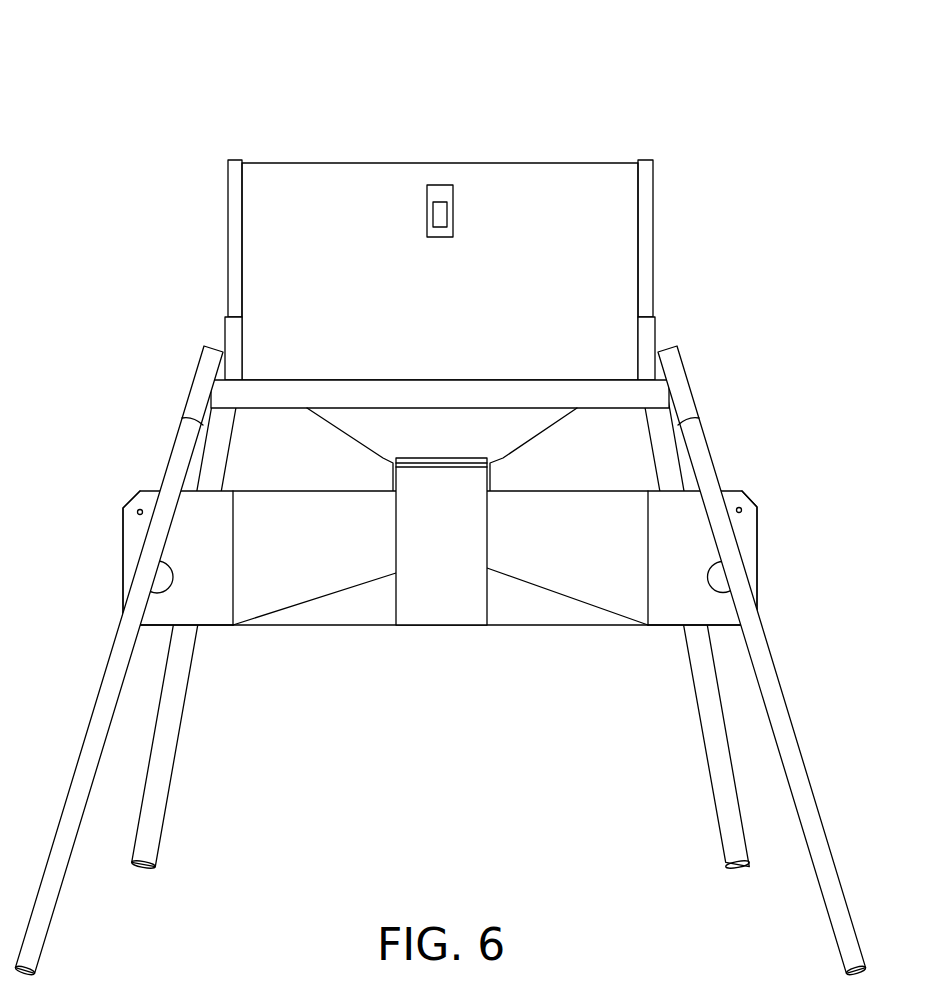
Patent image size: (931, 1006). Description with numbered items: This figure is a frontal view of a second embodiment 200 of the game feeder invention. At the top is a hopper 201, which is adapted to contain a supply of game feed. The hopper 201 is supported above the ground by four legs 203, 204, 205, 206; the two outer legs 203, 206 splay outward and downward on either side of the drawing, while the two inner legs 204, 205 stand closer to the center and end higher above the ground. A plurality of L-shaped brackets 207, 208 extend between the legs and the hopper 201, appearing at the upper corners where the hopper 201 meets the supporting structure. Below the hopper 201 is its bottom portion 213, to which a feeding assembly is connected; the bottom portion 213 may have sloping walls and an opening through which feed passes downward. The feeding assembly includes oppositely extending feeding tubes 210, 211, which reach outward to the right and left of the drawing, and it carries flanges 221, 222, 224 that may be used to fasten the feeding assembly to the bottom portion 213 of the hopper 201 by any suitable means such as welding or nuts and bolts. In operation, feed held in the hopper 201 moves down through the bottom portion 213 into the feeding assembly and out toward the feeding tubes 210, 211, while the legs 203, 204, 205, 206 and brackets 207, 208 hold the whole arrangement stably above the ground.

The second embodiment 200 is at (441, 536).
The hopper 201 is at (528, 182).
The leg 203 is at (815, 877).
The leg 204 is at (703, 730).
The leg 205 is at (181, 746).
The leg 206 is at (55, 922).
The L-shaped bracket 207 is at (232, 332).
The L-shaped bracket 208 is at (657, 337).
The feeding tube 210 is at (757, 532).
The feeding tube 211 is at (120, 520).
The bottom portion of the hopper 213 is at (190, 383).
The flange 221 is at (503, 462).
The flange 222 is at (382, 462).
The flange 224 is at (436, 469).